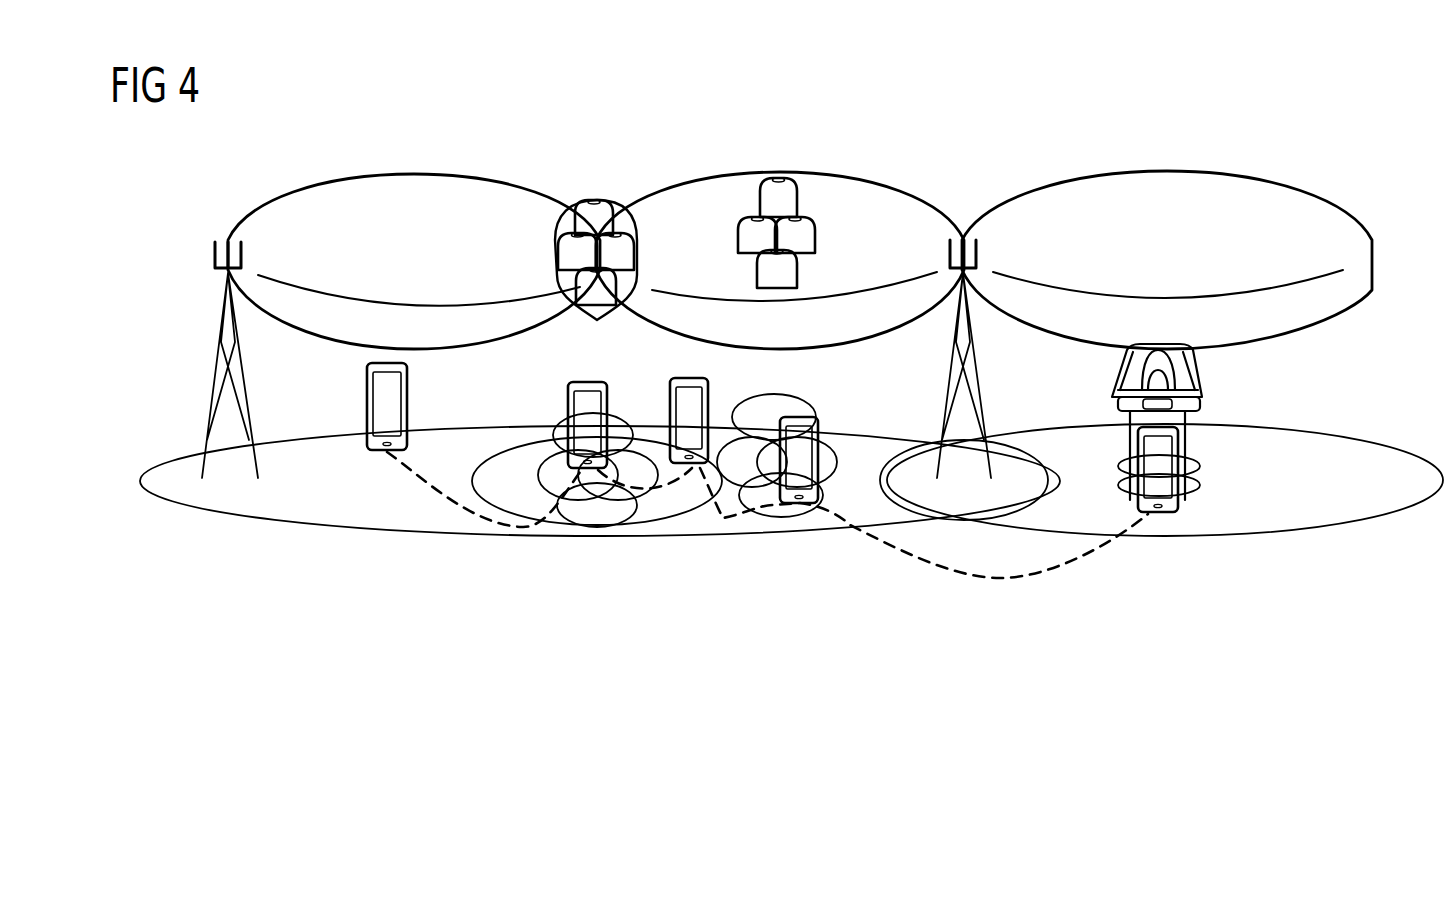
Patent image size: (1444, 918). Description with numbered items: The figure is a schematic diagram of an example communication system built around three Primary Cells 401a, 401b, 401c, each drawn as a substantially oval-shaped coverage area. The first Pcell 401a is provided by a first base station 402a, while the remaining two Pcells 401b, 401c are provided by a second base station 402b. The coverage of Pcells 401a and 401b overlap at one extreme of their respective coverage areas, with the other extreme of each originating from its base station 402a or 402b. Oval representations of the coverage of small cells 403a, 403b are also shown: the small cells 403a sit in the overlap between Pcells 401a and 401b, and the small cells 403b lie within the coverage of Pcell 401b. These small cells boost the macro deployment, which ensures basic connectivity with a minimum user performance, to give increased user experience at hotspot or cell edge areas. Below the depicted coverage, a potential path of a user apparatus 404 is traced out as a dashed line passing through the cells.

The primary cell 401a is at (390, 152).
The primary cell 401b is at (886, 157).
The primary cell 401c is at (1245, 157).
The base station 402a is at (200, 374).
The base station 402b is at (935, 352).
The small cells 403a is at (616, 233).
The small cells 403b is at (825, 232).
The user apparatus 404 is at (538, 530).